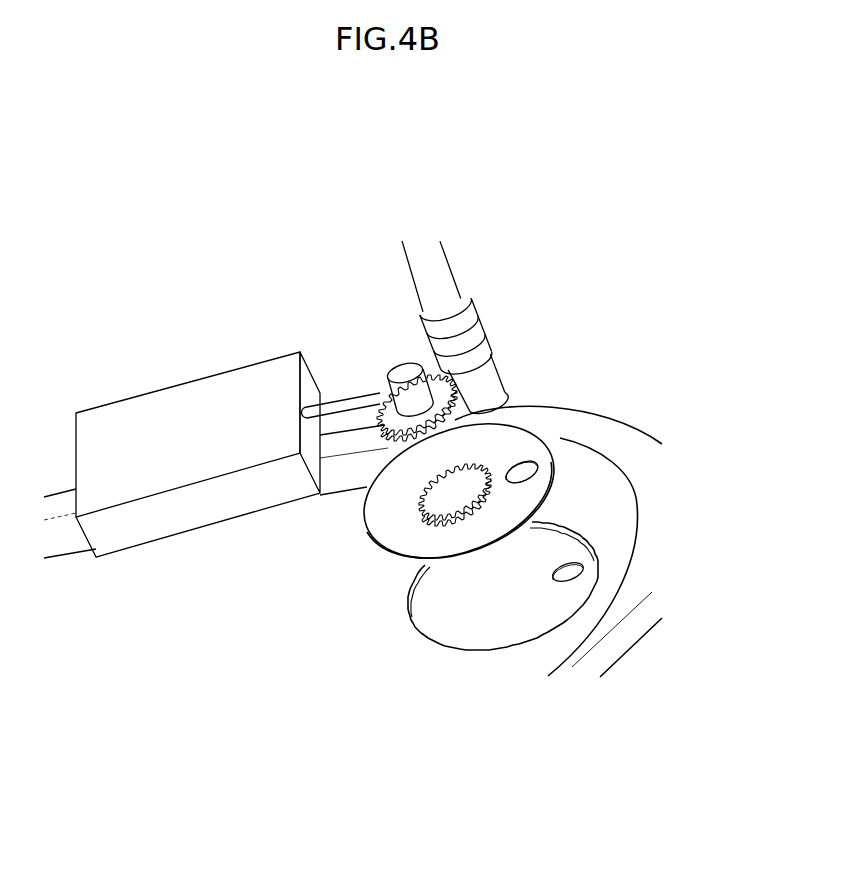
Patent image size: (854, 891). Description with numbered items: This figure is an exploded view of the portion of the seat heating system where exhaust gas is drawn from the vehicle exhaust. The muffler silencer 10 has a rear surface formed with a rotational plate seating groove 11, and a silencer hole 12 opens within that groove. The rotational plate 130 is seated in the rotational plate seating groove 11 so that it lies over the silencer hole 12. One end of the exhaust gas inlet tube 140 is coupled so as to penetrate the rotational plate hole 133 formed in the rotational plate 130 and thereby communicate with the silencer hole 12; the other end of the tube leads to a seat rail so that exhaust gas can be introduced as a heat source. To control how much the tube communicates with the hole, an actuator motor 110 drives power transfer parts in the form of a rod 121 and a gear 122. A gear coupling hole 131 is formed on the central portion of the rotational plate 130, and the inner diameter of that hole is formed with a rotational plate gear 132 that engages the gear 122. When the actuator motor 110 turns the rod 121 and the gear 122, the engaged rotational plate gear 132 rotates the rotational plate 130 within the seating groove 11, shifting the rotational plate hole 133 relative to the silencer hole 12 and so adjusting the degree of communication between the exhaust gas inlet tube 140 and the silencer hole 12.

The muffler silencer 10 is at (613, 522).
The rotational plate seating groove 11 is at (527, 605).
The silencer hole 12 is at (575, 568).
The actuator motor 110 is at (162, 402).
The rod 121 is at (402, 368).
The gear 122 is at (412, 432).
The rotational plate 130 is at (513, 443).
The gear coupling hole 131 is at (457, 497).
The rotational plate gear 132 is at (467, 497).
The rotational plate hole 133 is at (530, 463).
The exhaust gas inlet tube 140 is at (440, 282).